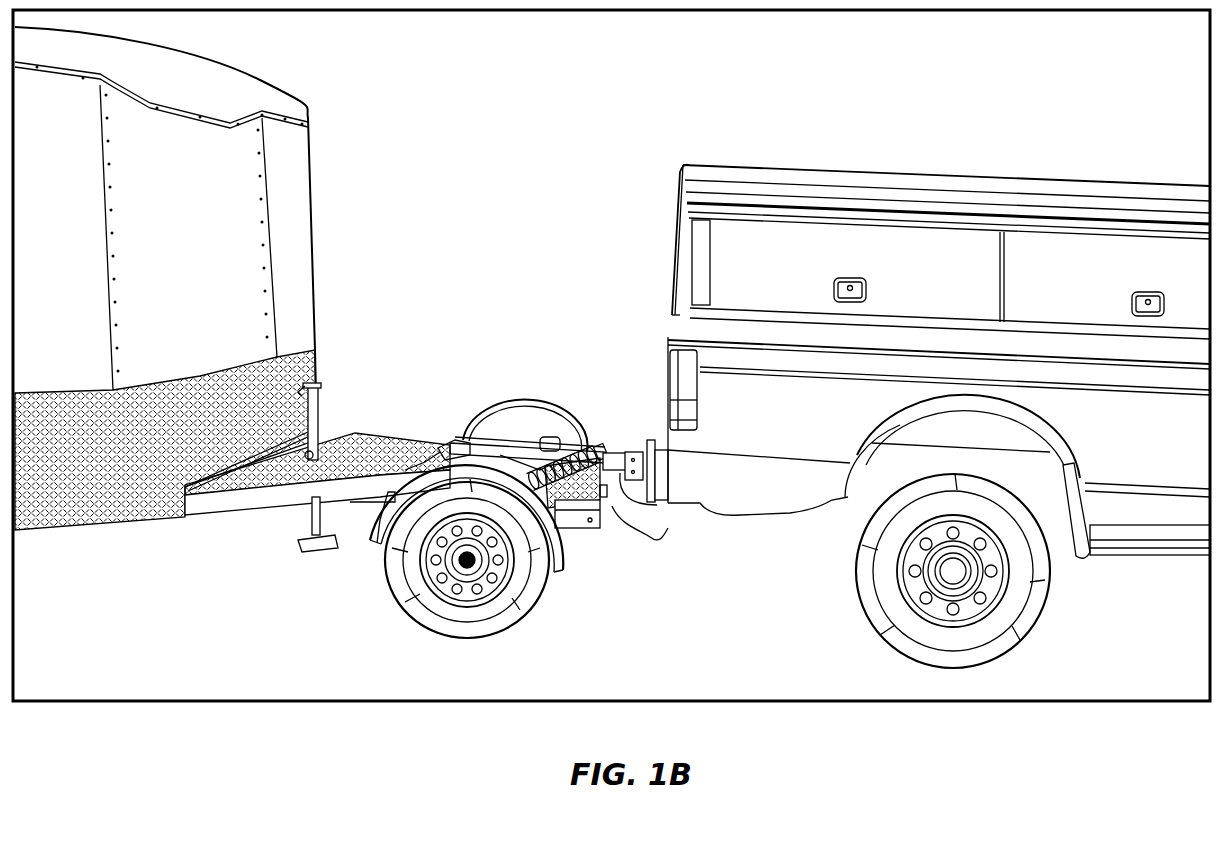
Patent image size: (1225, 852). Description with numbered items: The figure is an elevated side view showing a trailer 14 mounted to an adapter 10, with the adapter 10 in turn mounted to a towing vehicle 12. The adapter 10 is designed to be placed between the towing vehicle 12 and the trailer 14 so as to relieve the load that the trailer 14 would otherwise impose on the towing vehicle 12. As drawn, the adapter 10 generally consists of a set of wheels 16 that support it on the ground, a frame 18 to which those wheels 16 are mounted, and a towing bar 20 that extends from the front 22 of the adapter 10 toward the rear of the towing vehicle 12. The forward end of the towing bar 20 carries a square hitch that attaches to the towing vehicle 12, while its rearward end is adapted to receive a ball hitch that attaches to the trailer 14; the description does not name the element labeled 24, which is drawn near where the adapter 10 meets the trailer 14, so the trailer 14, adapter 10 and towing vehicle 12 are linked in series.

The adapter 10 is at (500, 410).
The towing vehicle 12 is at (740, 503).
The trailer 14 is at (193, 513).
The set of wheels 16 is at (510, 627).
The frame 18 is at (587, 543).
The towing bar 20 is at (548, 440).
The front 22 is at (620, 450).
The tongue mounting bracket 24 is at (452, 440).